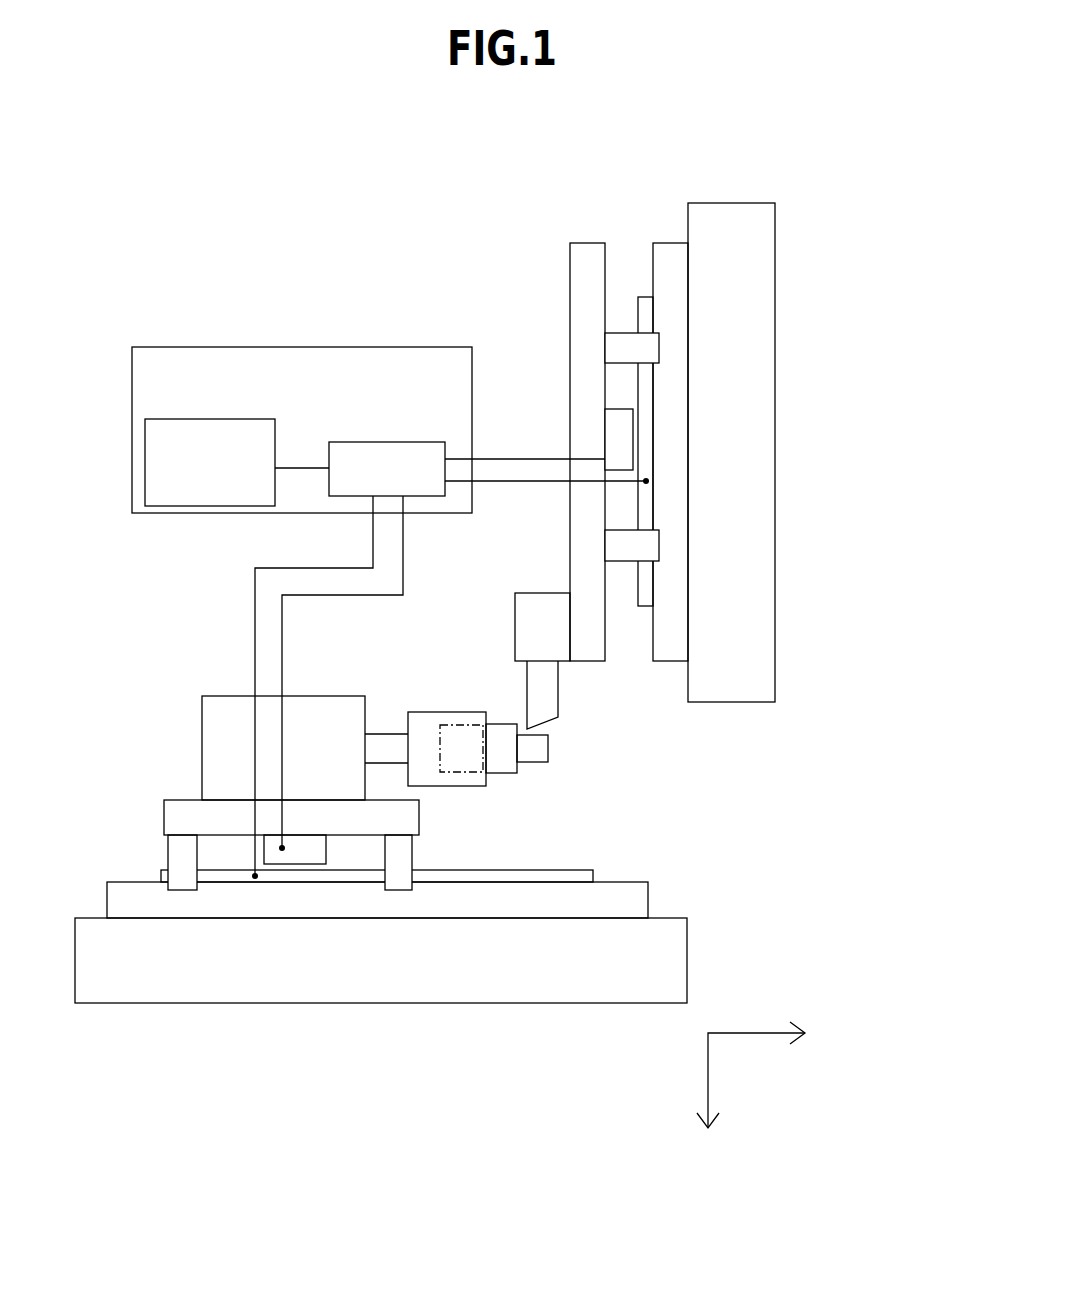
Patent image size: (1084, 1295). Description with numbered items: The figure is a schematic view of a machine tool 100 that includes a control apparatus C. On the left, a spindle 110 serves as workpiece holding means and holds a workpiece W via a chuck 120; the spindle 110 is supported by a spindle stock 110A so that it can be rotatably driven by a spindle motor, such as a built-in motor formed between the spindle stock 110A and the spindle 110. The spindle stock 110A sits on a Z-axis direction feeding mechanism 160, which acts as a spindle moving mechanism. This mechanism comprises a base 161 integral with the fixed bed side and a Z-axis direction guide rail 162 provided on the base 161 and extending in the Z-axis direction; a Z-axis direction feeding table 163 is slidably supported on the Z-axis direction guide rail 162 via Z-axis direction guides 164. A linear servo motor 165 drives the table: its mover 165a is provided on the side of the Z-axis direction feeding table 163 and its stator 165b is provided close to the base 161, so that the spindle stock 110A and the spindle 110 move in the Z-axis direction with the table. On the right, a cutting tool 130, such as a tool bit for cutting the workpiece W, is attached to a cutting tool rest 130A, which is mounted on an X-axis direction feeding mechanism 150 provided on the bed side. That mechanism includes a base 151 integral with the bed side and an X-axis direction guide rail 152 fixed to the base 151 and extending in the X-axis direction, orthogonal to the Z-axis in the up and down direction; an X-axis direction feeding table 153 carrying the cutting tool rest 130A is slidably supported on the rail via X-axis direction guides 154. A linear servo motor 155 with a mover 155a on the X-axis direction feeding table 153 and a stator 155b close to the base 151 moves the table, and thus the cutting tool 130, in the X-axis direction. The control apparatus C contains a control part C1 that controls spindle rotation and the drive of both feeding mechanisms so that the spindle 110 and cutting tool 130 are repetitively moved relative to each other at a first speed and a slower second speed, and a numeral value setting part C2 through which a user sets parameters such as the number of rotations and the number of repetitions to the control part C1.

The machine tool 100 is at (226, 243).
The control apparatus C is at (305, 347).
The control part C1 is at (388, 440).
The numeral value setting part C2 is at (220, 417).
The spindle 110 is at (388, 745).
The spindle stock 110A is at (222, 728).
The chuck 120 is at (447, 717).
The workpiece W is at (533, 745).
The cutting tool 130 is at (540, 688).
The cutting tool rest 130A is at (540, 610).
The X-axis direction feeding mechanism 150 is at (772, 117).
The base 151 is at (752, 216).
The X-axis direction guide rail 152 is at (668, 258).
The X-axis direction feeding table 153 is at (580, 321).
The X-axis direction guides 154 is at (622, 345).
The linear servo motor 155 is at (850, 258).
The mover 155a is at (620, 420).
The stator 155b is at (647, 443).
The Z-axis direction feeding mechanism 160 is at (148, 1068).
The base 161 is at (530, 978).
The Z-axis direction guide rail 162 is at (638, 902).
The Z-axis direction feeding table 163 is at (188, 808).
The Z-axis direction guides 164 is at (185, 860).
The linear servo motor 165 is at (477, 1047).
The mover 165a is at (308, 850).
The stator 165b is at (359, 873).